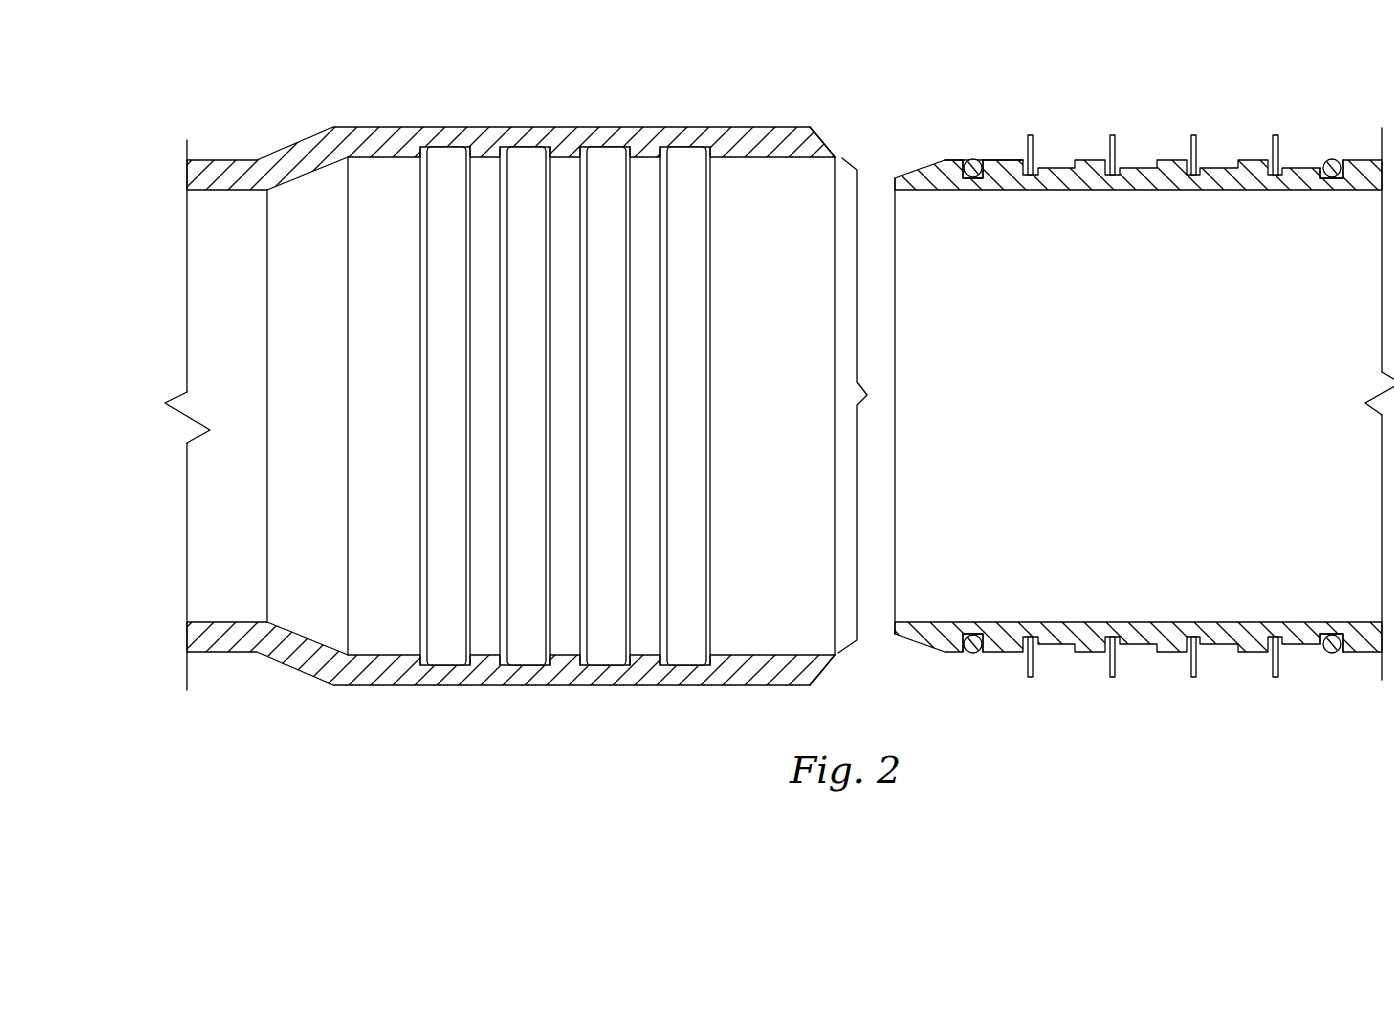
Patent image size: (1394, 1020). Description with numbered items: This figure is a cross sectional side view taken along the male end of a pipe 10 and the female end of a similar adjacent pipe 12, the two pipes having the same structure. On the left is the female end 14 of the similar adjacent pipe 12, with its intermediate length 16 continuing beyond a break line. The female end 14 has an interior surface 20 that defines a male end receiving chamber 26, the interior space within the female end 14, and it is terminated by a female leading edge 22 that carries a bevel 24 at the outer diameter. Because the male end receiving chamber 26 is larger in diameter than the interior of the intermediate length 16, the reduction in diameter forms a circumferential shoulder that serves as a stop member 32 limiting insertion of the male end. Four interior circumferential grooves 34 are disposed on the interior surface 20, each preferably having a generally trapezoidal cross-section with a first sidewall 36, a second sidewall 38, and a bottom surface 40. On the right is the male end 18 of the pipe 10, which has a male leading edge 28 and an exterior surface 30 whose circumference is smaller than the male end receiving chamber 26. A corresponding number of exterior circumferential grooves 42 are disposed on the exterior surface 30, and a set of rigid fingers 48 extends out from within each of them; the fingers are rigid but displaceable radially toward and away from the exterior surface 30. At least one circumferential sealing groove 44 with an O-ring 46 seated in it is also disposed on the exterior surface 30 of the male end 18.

The pipe 10 is at (1180, 100).
The similar adjacent pipe 12 is at (303, 98).
The female end 14 is at (735, 128).
The intermediate length 16 is at (203, 158).
The male end 18 is at (1158, 408).
The interior surface 20 is at (368, 405).
The female leading edge 22 is at (838, 658).
The bevel 24 is at (822, 140).
The male end receiving chamber 26 is at (867, 405).
The male leading edge 28 is at (905, 177).
The exterior surface 30 is at (1007, 160).
The stop member 32 is at (295, 178).
The interior circumferential grooves 34 is at (549, 415).
The first sidewall 36 is at (465, 220).
The second sidewall 38 is at (419, 255).
The bottom surface 40 is at (505, 157).
The exterior circumferential grooves 42 is at (1322, 665).
The circumferential sealing groove 44 is at (982, 174).
The O-ring 46 is at (971, 156).
The rigid fingers 48 is at (1035, 147).